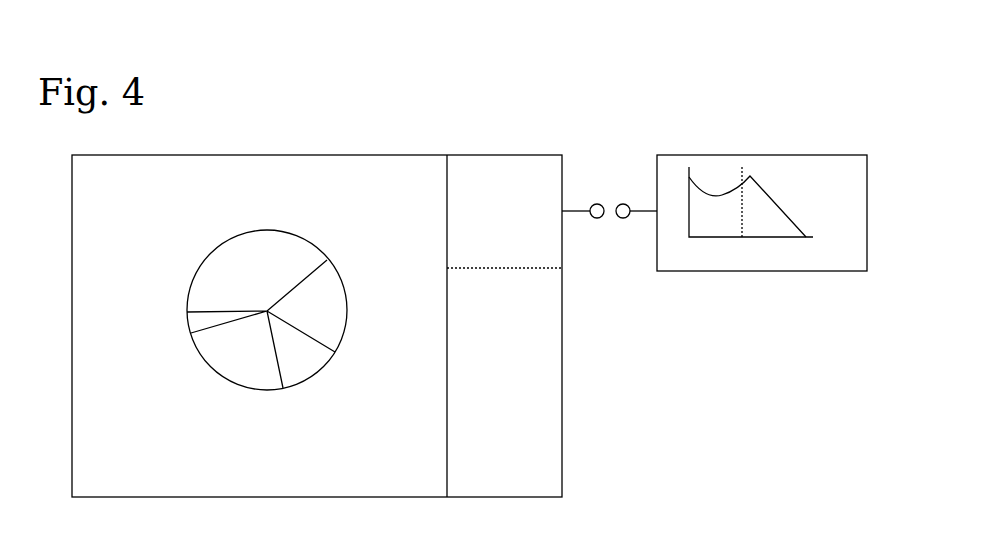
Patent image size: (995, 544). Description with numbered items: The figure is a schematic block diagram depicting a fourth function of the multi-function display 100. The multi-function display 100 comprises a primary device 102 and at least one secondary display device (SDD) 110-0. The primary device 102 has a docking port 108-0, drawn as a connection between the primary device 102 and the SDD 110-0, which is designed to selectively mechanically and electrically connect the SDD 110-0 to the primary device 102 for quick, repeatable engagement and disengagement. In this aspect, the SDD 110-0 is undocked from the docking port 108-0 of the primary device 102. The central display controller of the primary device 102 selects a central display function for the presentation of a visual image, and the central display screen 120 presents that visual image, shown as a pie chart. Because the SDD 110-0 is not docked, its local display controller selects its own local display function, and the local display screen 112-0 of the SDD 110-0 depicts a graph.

The multi-function display 100 is at (732, 98).
The primary device 102 is at (178, 153).
The central display screen 120 is at (432, 478).
The docking port 108-0 is at (598, 186).
The secondary display device (SDD) 110-0 is at (736, 153).
The local display screen 112-0 is at (860, 265).